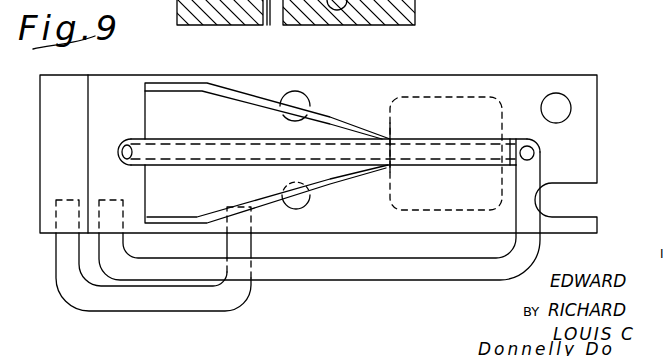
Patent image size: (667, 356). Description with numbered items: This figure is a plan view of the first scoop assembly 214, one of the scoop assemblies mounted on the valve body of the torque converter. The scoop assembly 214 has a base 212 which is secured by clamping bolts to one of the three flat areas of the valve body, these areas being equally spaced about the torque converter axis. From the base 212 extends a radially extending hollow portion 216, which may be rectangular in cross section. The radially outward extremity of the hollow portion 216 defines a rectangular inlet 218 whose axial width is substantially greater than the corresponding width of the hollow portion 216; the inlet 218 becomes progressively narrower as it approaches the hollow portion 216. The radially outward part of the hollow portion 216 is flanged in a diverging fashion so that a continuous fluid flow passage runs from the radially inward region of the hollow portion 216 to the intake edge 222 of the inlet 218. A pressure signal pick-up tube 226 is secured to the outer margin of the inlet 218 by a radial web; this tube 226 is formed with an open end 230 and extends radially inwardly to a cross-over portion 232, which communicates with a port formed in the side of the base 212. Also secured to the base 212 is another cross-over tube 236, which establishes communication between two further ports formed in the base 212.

The base 212 is at (598, 87).
The first scoop assembly 214 is at (518, 118).
The radially extending hollow portion 216 is at (410, 139).
The rectangular inlet 218 is at (227, 84).
The intake edge 222 is at (146, 193).
The pressure signal pick-up tube 226 is at (163, 139).
The open end 230 is at (122, 141).
The cross-over portion 232 is at (285, 274).
The cross-over tube 236 is at (113, 309).